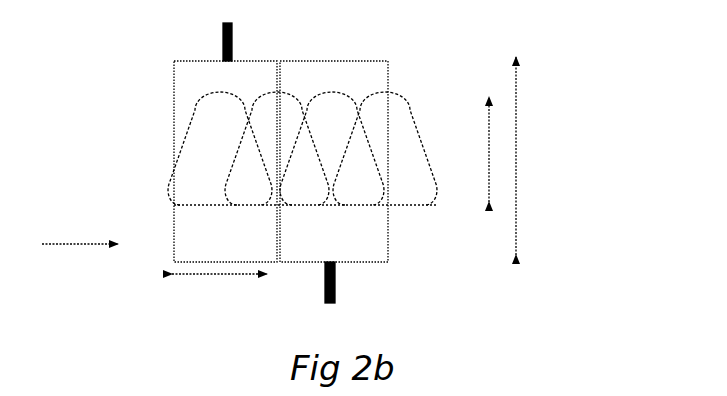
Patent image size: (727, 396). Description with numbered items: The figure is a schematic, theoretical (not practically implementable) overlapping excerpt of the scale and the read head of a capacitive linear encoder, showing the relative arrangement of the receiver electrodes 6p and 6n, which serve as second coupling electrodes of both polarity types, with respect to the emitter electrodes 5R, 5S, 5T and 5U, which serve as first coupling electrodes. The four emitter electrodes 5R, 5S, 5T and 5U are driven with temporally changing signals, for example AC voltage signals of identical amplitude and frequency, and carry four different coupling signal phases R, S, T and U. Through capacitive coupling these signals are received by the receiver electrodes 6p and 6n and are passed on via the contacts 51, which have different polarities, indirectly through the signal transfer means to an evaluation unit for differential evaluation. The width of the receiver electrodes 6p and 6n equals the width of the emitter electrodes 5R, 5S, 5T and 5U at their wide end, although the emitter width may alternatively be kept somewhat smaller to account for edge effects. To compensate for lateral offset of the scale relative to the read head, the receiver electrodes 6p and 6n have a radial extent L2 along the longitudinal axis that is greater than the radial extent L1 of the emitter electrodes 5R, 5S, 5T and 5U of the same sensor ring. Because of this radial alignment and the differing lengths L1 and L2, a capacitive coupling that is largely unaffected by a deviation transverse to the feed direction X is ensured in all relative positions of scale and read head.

The contacts 51 is at (223, 39).
The emitter electrode 5R is at (190, 189).
The emitter electrode 5S is at (204, 130).
The emitter electrode 5T is at (374, 115).
The emitter electrode 5U is at (400, 173).
The receiver electrode 6p is at (246, 136).
The receiver electrode 6n is at (337, 139).
The radial extent of the emitter electrodes L1 is at (545, 149).
The radial extent of the receiver electrodes L2 is at (559, 156).
The feed direction X is at (91, 246).